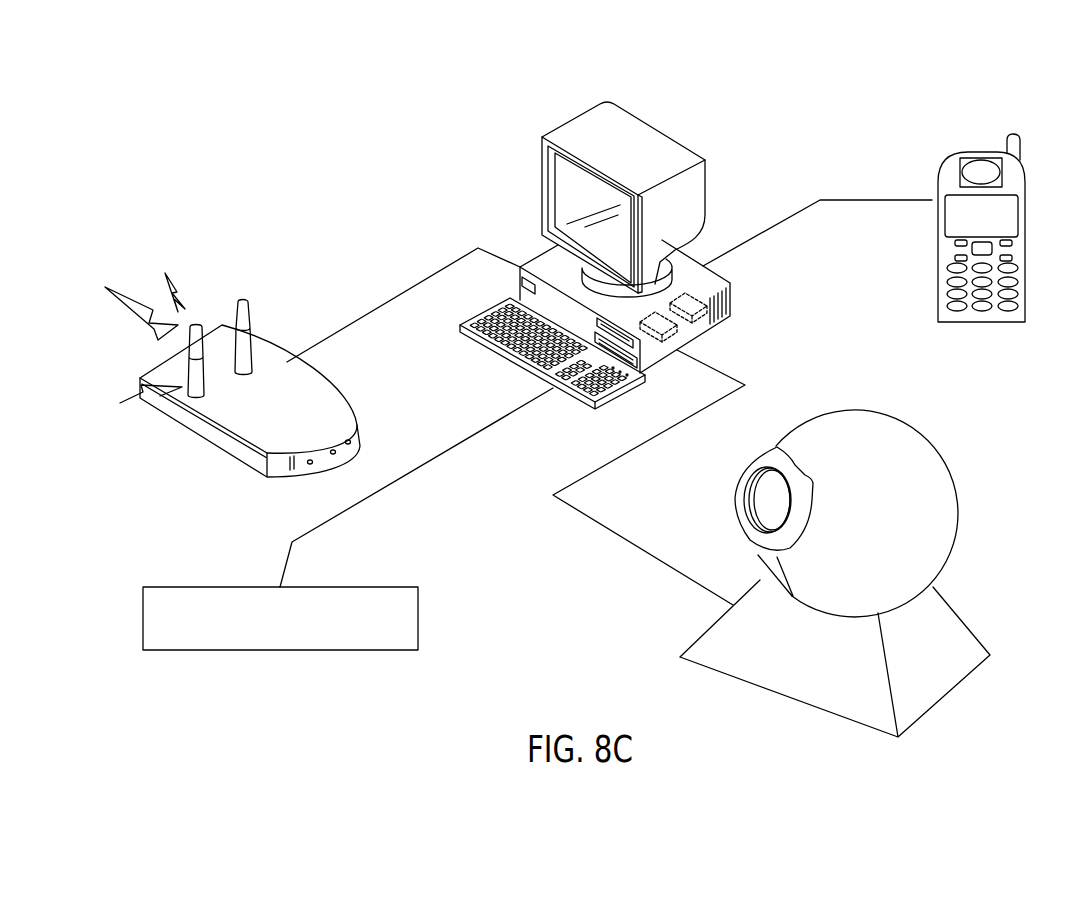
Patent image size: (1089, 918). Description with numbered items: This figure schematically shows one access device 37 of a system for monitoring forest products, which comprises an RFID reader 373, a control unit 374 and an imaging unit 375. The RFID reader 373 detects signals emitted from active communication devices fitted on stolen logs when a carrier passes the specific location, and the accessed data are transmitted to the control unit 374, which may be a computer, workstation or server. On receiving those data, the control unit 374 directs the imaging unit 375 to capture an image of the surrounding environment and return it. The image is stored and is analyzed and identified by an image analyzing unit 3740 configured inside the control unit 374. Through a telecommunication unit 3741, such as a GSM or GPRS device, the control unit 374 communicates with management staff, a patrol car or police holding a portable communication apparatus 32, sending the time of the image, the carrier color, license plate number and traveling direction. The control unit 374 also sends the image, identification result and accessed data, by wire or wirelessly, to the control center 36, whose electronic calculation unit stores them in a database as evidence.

The access device 37 is at (406, 117).
The control unit 374 is at (670, 162).
The image analyzing unit 3740 is at (702, 318).
The telecommunication unit 3741 is at (673, 329).
The portable communication apparatus 32 is at (1023, 277).
The RFID reader 373 is at (245, 413).
The imaging unit 375 is at (903, 522).
The control center 36 is at (403, 617).